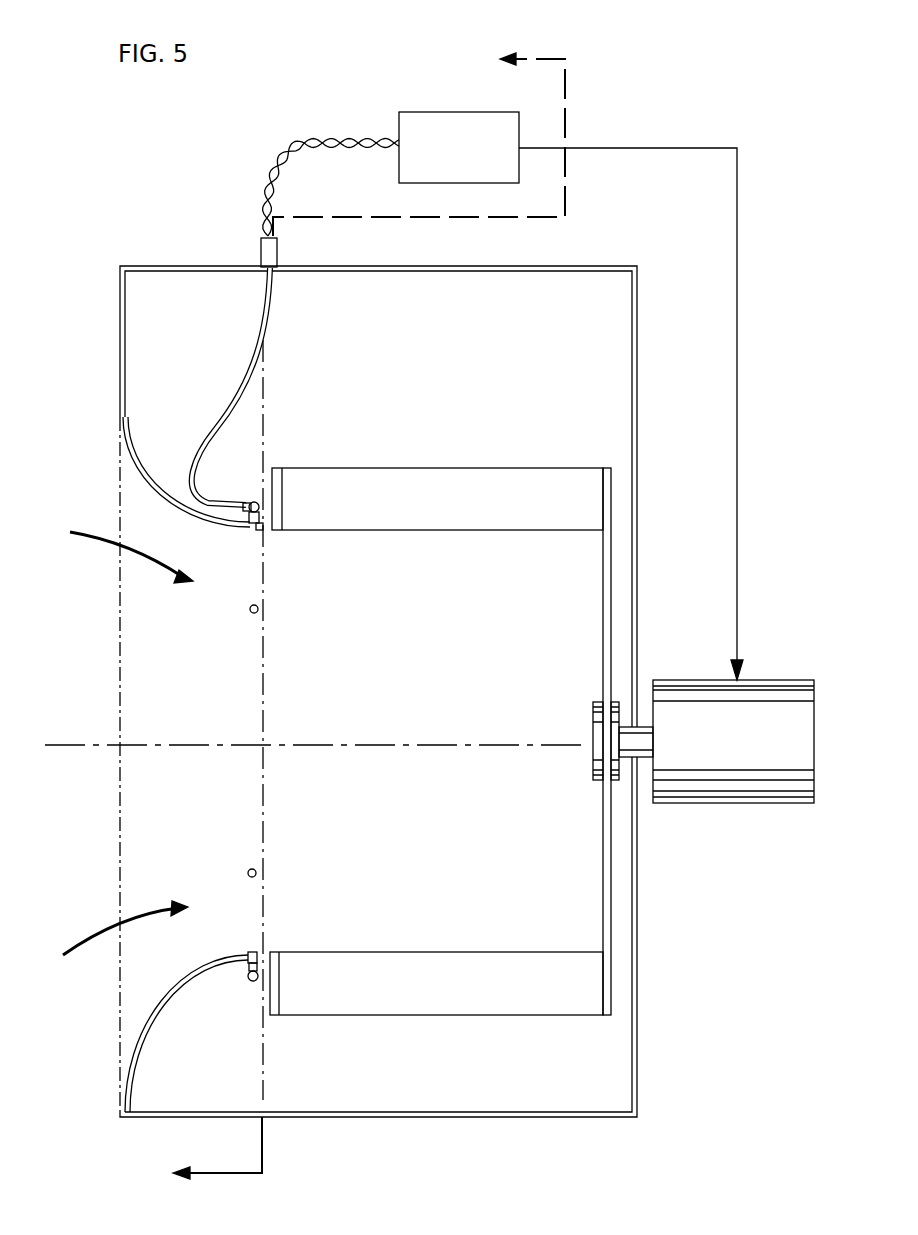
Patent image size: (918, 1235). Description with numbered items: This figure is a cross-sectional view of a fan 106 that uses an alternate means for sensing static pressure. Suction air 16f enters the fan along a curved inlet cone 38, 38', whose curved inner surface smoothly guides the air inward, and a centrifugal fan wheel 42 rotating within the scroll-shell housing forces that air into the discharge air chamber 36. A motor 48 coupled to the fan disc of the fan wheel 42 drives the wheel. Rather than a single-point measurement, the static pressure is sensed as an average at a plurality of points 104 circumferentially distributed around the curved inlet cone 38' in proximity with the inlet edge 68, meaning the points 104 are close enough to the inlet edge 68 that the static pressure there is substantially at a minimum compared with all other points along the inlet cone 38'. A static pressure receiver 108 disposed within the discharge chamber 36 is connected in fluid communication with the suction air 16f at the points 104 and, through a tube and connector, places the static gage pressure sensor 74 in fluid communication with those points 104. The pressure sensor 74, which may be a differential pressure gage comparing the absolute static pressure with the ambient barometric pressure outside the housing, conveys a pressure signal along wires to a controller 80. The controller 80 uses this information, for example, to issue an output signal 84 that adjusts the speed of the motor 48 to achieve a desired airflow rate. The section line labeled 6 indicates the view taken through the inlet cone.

The fan 106 is at (121, 218).
The discharge air chamber 36 is at (443, 387).
The inlet edge 68 is at (263, 700).
The curved inlet cone 38 is at (186, 472).
The curved inlet cone 38' is at (148, 1033).
The suction air 16f is at (148, 910).
The points 104 is at (256, 529).
The static pressure receiver 108 is at (254, 502).
The pressure sensor 74 is at (261, 258).
The controller 80 is at (473, 162).
The output signal 84 is at (640, 149).
The section line 6- 6 is at (358, 617).
The centrifugal fan wheel 42 is at (497, 1015).
The motor 48 is at (688, 680).